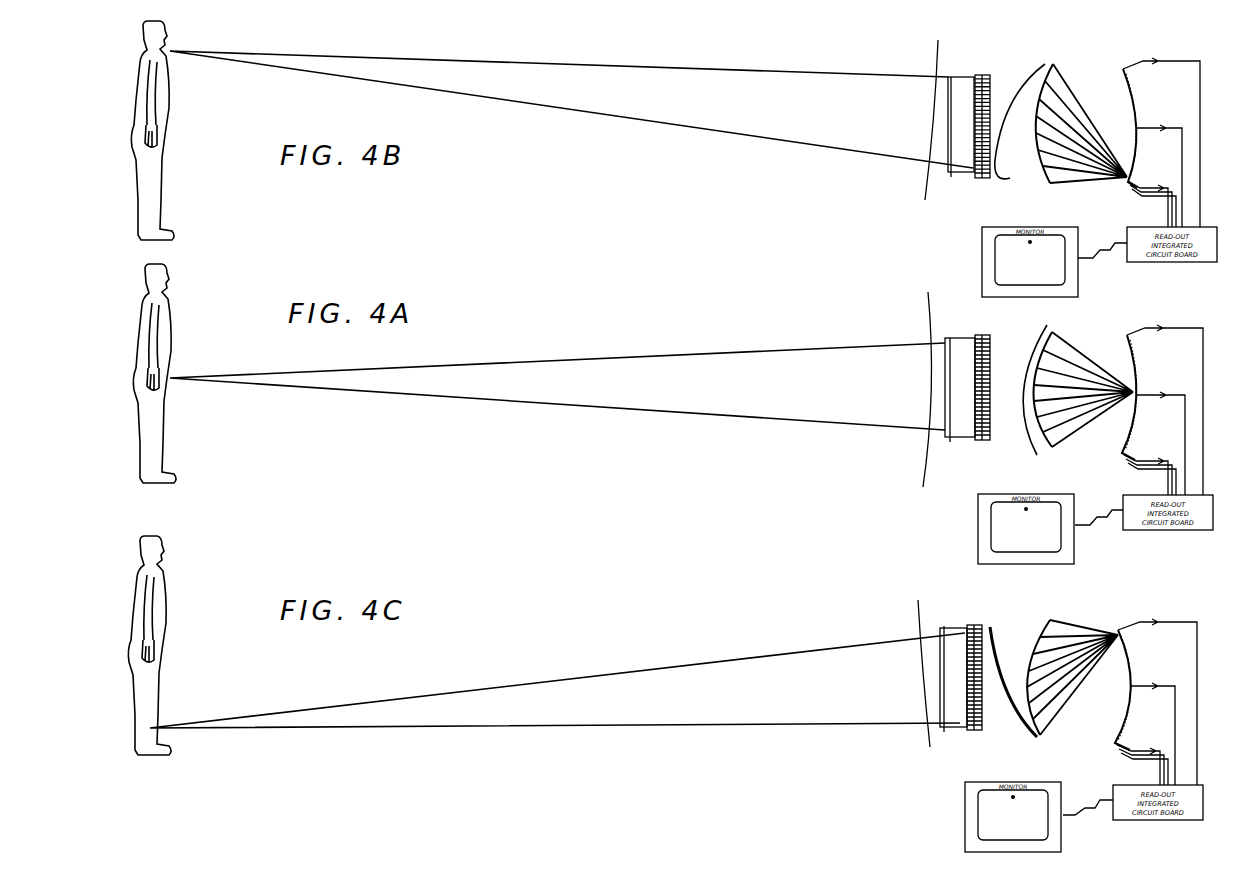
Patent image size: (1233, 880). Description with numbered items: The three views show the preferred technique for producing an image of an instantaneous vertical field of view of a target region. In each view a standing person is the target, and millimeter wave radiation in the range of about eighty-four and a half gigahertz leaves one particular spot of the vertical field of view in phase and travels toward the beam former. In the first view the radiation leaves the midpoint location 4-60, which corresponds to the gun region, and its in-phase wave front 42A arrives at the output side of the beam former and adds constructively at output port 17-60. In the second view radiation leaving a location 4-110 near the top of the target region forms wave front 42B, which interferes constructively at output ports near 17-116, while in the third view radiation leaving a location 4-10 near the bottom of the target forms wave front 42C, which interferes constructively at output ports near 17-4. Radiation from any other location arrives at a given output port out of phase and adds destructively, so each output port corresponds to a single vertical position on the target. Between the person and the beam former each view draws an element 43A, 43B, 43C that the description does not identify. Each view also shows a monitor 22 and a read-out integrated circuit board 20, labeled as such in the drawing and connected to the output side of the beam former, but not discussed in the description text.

In FIG. 4B, the field of view location near top of target 4-110 is at (187, 45).
In FIG. 4A, the field of view location at midpoint of target 4-60 is at (188, 367).
In FIG. 4C, the field of view location near bottom of target 4-10 is at (165, 720).
In FIG. 4B, the lens 43B is at (937, 52).
In FIG. 4A, the lens 43A is at (930, 313).
In FIG. 4C, the lens 43C is at (918, 600).
In FIG. 4B, the wave front from top of target region 42B is at (1010, 180).
In FIG. 4A, the wave front from gun region 42A is at (1032, 447).
In FIG. 4C, the wave front from bottom of target region 42C is at (1027, 731).
In FIG. 4B, the output port 17-116 is at (1114, 194).
In FIG. 4A, the output port 17-60 is at (1150, 390).
In FIG. 4C, the output port 17-4 is at (1121, 608).
In FIG. 4B, the monitor 22 is at (965, 266).
In FIG. 4B, the read-out integrated circuit board 20 is at (1131, 263).
In FIG. 4A, the read-out integrated circuit board 20 is at (1131, 531).
In FIG. 4C, the read-out integrated circuit board 20 is at (1123, 822).